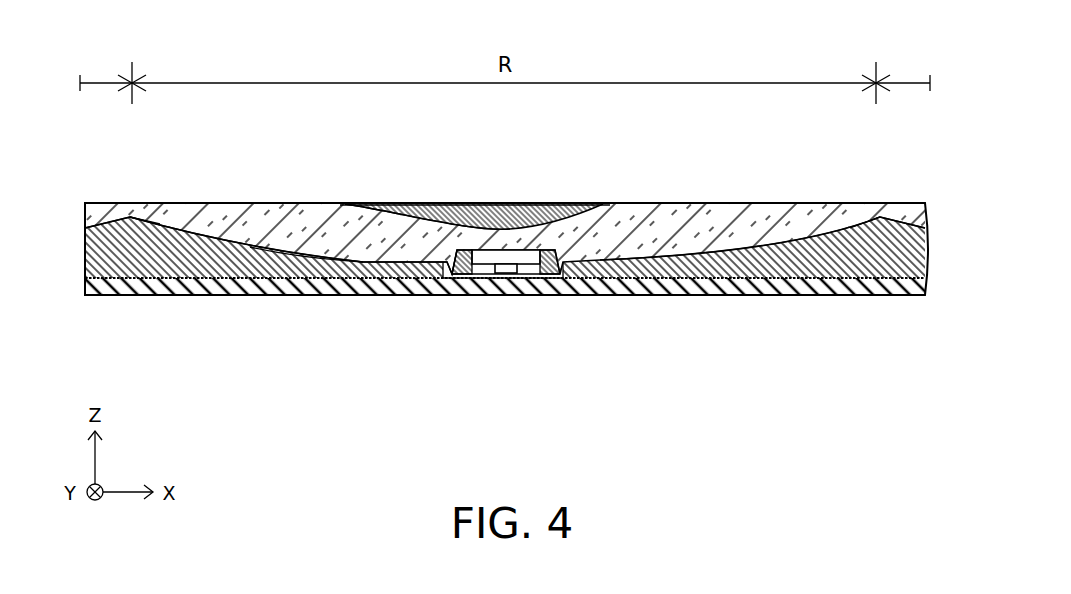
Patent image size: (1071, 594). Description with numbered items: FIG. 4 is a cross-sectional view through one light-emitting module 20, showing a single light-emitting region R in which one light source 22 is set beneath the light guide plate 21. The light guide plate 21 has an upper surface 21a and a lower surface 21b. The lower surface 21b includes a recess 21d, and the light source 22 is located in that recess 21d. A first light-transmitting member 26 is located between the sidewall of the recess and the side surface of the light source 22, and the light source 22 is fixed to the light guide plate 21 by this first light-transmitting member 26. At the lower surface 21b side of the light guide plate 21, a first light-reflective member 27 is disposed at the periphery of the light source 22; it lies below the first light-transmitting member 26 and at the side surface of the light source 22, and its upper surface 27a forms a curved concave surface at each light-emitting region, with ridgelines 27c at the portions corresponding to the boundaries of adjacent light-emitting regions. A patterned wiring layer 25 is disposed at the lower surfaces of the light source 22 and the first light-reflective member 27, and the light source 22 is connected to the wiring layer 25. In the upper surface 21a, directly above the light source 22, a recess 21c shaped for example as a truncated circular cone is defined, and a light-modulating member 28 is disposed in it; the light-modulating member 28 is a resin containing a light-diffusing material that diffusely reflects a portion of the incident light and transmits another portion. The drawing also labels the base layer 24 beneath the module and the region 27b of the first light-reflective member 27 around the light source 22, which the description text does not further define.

The light-emitting module 20 is at (914, 181).
The light guide plate 21 is at (300, 212).
The upper surface 21a is at (745, 214).
The lower surface 21b is at (298, 256).
The recess 21c is at (400, 217).
The recess 21d is at (448, 263).
The light source 22 is at (530, 264).
The substrate 24 is at (147, 290).
The wiring layer 25 is at (503, 274).
The first light-transmitting member 26 is at (460, 256).
The first light-reflective member 27 is at (218, 258).
The upper surface 27a is at (215, 238).
The opening of adhesive layer 27b is at (486, 277).
The ridgelines 27c is at (131, 216).
The light-modulating member 28 is at (517, 222).